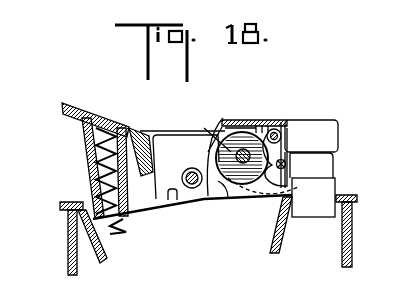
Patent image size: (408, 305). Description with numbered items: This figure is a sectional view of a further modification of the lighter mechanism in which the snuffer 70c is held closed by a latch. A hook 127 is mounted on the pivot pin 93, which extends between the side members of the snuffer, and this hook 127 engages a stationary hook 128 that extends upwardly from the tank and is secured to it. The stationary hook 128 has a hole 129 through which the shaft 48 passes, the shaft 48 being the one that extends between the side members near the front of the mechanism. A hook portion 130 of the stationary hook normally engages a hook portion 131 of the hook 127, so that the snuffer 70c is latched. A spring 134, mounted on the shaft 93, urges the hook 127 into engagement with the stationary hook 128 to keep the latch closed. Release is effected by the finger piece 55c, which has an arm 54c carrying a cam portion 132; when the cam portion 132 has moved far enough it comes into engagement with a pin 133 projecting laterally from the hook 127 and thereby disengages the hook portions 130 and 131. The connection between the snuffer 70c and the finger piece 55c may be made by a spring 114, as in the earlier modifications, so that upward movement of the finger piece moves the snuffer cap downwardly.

The finger piece 55c is at (84, 151).
The spring 114 is at (148, 134).
The arm 54c is at (218, 167).
The shaft 48 is at (207, 137).
The stationary hook 128 is at (222, 193).
The hole 129 is at (236, 183).
The hook portion 130 is at (259, 125).
The hook portion 131 is at (256, 187).
The hook 127 is at (285, 146).
The pivot pin 93 is at (273, 128).
The pin 133 is at (286, 163).
The snuffer 70c is at (319, 128).
The spring 134 is at (286, 146).
The cam portion 132 is at (335, 175).